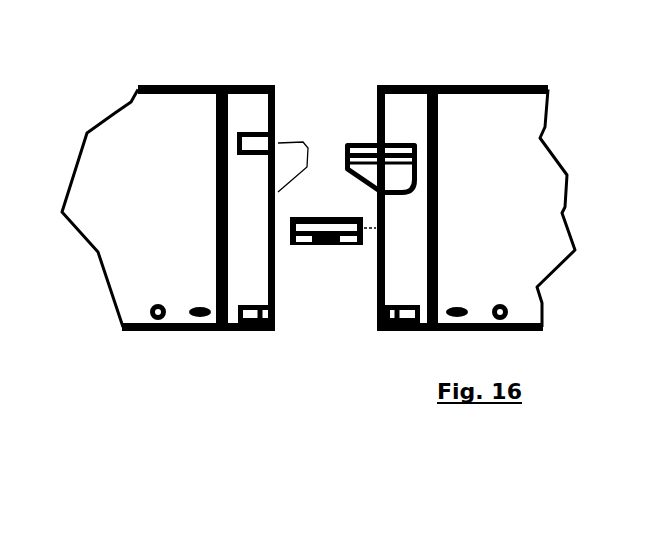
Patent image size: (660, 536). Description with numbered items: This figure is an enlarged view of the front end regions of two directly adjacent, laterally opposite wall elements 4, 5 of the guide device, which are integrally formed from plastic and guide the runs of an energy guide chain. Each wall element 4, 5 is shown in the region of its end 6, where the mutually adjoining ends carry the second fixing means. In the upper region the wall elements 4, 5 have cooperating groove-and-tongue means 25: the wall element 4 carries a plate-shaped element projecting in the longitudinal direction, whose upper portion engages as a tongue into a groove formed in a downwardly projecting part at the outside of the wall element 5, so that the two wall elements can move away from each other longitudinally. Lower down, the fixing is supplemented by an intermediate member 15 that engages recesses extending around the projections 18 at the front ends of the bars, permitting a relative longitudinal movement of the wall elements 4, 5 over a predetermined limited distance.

The wall element 4 is at (562, 122).
The wall element 5 is at (110, 103).
The end 6 is at (277, 102).
The intermediate member 15 is at (322, 215).
The projection 18 is at (263, 322).
The groove-and-tongue means 25 is at (358, 135).